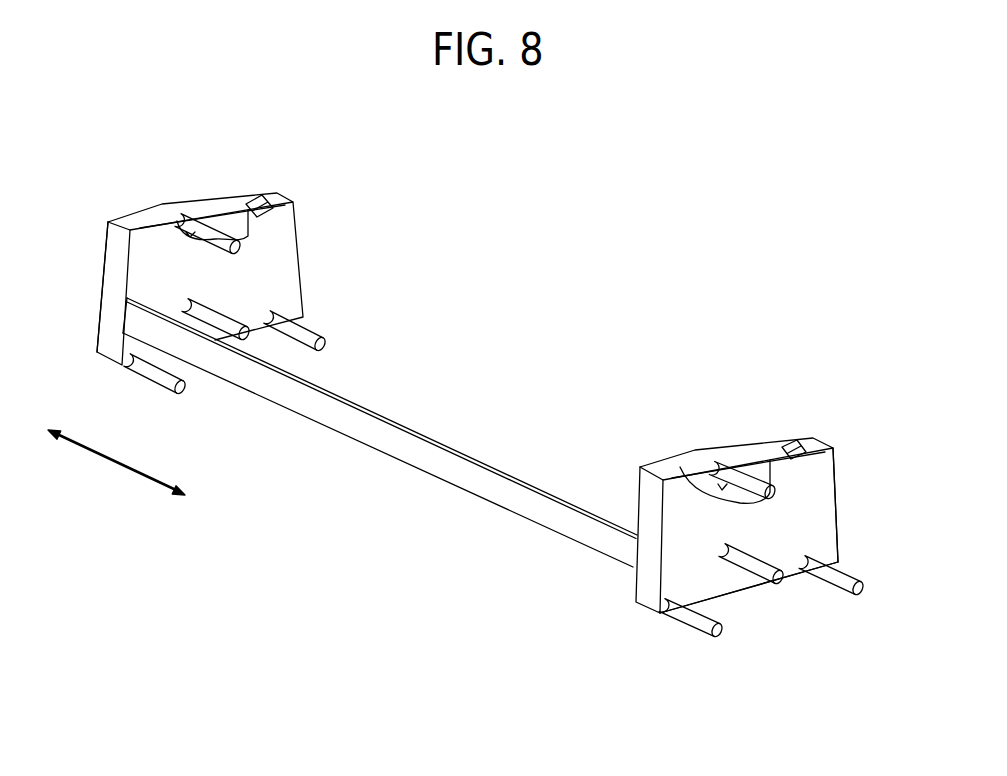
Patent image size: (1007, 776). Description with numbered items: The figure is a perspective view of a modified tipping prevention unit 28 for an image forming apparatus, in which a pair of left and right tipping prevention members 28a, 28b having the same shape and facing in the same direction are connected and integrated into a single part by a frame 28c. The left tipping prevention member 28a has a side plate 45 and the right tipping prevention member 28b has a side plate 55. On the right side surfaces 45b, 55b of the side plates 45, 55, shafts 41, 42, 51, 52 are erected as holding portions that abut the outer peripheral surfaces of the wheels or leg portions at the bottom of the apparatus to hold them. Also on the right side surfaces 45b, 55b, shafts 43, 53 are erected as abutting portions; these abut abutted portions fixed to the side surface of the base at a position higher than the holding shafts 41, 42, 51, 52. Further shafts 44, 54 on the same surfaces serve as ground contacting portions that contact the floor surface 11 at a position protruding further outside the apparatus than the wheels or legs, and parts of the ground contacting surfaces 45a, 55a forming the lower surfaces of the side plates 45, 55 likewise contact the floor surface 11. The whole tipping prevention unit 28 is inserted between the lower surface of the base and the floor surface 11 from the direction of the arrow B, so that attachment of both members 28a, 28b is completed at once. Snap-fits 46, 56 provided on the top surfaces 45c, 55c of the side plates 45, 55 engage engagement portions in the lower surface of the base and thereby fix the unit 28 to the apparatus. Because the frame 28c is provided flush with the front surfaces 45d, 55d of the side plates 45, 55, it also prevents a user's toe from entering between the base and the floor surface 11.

The floor surface 11 is at (755, 657).
The tipping prevention unit 28 is at (488, 433).
The tipping prevention member 28a is at (106, 211).
The tipping prevention member 28b is at (852, 477).
The frame 28c is at (365, 433).
The shaft 41 is at (251, 334).
The shaft 42 is at (327, 345).
The shaft 43 is at (215, 218).
The shaft 44 is at (182, 392).
The side plate 45 is at (218, 278).
The ground contacting surface 45a is at (158, 355).
The right side surface 45b is at (288, 271).
The top surface 45c is at (213, 207).
The front surface 45d is at (113, 272).
The snap-fit 46 is at (277, 193).
The shaft 51 is at (782, 577).
The shaft 52 is at (862, 590).
The shaft 53 is at (676, 462).
The shaft 54 is at (718, 638).
The side plate 55 is at (752, 519).
The ground contacting surface 55a is at (747, 590).
The right side surface 55b is at (790, 523).
The top surface 55c is at (758, 452).
The front surface 55d is at (648, 580).
The snap-fit 56 is at (797, 447).
The arrow B is at (116, 462).